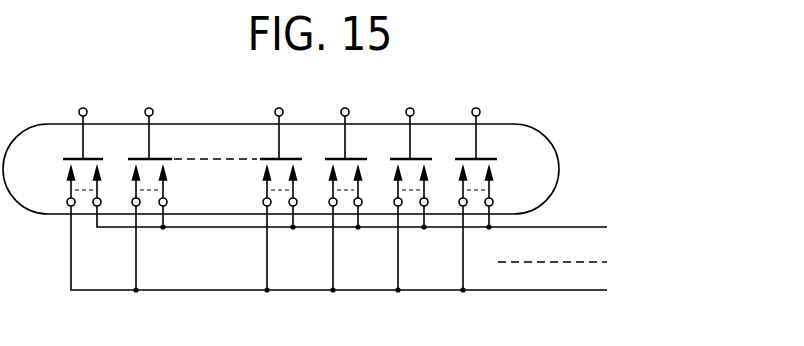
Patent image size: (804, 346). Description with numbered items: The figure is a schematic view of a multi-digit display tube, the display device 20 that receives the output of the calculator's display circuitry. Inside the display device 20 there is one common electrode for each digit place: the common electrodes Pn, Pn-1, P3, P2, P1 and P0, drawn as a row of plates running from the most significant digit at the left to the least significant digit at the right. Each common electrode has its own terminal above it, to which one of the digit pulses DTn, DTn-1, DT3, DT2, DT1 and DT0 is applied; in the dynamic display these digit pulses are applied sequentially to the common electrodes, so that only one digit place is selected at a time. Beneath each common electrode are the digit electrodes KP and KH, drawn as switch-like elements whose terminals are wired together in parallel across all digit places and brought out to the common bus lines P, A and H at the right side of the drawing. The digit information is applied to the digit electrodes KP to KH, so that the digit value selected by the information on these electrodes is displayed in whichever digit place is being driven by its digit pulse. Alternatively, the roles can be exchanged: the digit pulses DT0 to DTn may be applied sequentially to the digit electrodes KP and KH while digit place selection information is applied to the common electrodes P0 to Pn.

The display device 20 is at (538, 131).
The digit pulse DTn is at (83, 121).
The digit pulse DTn-1 is at (153, 121).
The digit pulse DT3 is at (278, 121).
The digit pulse DT2 is at (343, 121).
The digit pulse DT1 is at (407, 121).
The digit pulse DT0 is at (473, 121).
The common electrode Pn is at (88, 158).
The common electrode Pn-1 is at (153, 158).
The common electrode P3 is at (293, 158).
The common electrode P2 is at (358, 158).
The common electrode P1 is at (423, 158).
The common electrode P0 is at (483, 158).
The digit electrode KP is at (100, 193).
The digit electrode KH is at (68, 207).
The pulse line P is at (360, 222).
The A line A is at (562, 263).
The hold line H is at (349, 254).